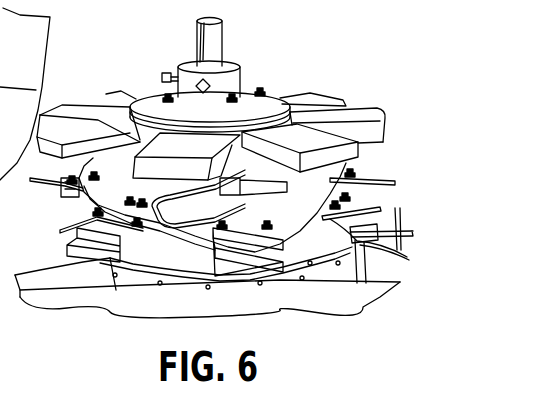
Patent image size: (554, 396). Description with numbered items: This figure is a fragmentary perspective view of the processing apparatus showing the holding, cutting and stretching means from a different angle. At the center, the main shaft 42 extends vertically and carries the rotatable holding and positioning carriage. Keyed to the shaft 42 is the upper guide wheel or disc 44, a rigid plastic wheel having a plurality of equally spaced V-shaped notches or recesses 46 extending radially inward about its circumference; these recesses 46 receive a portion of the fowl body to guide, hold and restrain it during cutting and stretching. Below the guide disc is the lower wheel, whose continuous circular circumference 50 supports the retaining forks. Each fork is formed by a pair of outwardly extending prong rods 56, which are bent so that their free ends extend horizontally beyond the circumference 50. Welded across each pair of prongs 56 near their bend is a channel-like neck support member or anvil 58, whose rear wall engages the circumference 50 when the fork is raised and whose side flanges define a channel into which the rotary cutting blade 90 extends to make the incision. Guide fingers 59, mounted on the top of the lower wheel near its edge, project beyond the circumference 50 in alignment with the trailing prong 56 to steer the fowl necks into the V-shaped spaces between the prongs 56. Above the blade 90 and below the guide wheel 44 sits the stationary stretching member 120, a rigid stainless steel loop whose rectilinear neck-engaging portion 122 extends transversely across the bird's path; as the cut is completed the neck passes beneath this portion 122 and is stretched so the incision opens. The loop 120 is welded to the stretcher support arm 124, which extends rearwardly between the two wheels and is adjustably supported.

The main shaft 42 is at (217, 42).
The upper guide wheel or disc 44 is at (305, 100).
The V-shaped notches or recesses 46 is at (222, 158).
The circular circumference 50 is at (172, 251).
The prong rods 56 is at (371, 214).
The neck support member or anvil 58 is at (108, 247).
The guide fingers 59 is at (50, 183).
The cutting blade 90 is at (40, 276).
The stationary stretching member 120 is at (163, 236).
The neck-engaging portion 122 is at (167, 208).
The stretcher support arm 124 is at (253, 173).